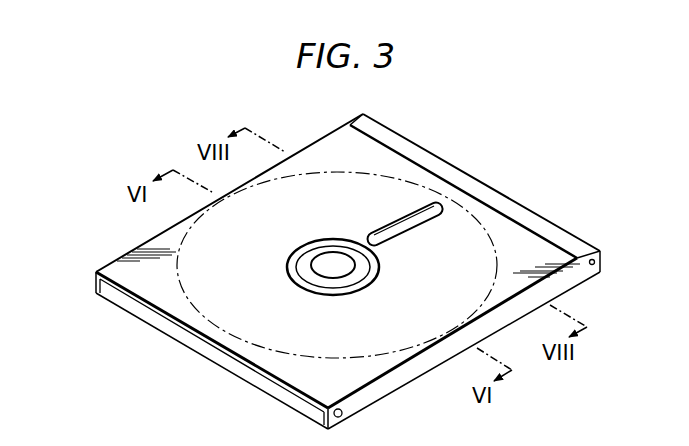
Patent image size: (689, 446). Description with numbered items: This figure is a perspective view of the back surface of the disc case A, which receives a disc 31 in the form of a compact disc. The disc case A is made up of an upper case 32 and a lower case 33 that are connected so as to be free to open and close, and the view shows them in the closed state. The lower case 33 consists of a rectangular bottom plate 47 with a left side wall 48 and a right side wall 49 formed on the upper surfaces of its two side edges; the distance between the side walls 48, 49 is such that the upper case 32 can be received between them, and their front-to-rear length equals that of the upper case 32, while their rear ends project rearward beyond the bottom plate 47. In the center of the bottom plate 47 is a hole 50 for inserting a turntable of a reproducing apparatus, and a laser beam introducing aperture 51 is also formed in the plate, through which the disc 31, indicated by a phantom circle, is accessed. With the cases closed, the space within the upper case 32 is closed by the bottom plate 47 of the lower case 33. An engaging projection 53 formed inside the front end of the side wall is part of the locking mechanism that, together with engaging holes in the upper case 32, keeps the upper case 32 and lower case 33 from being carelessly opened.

The disc 31 is at (503, 218).
The upper case 32 is at (248, 374).
The lower case 33 is at (148, 240).
The bottom plate 47 is at (172, 302).
The left side wall 48 is at (96, 282).
The right side wall 49 is at (393, 385).
The hole 50 is at (320, 252).
The laser beam introducing aperture 51 is at (387, 238).
The engaging projection 53 is at (344, 415).
The disc case A is at (492, 181).